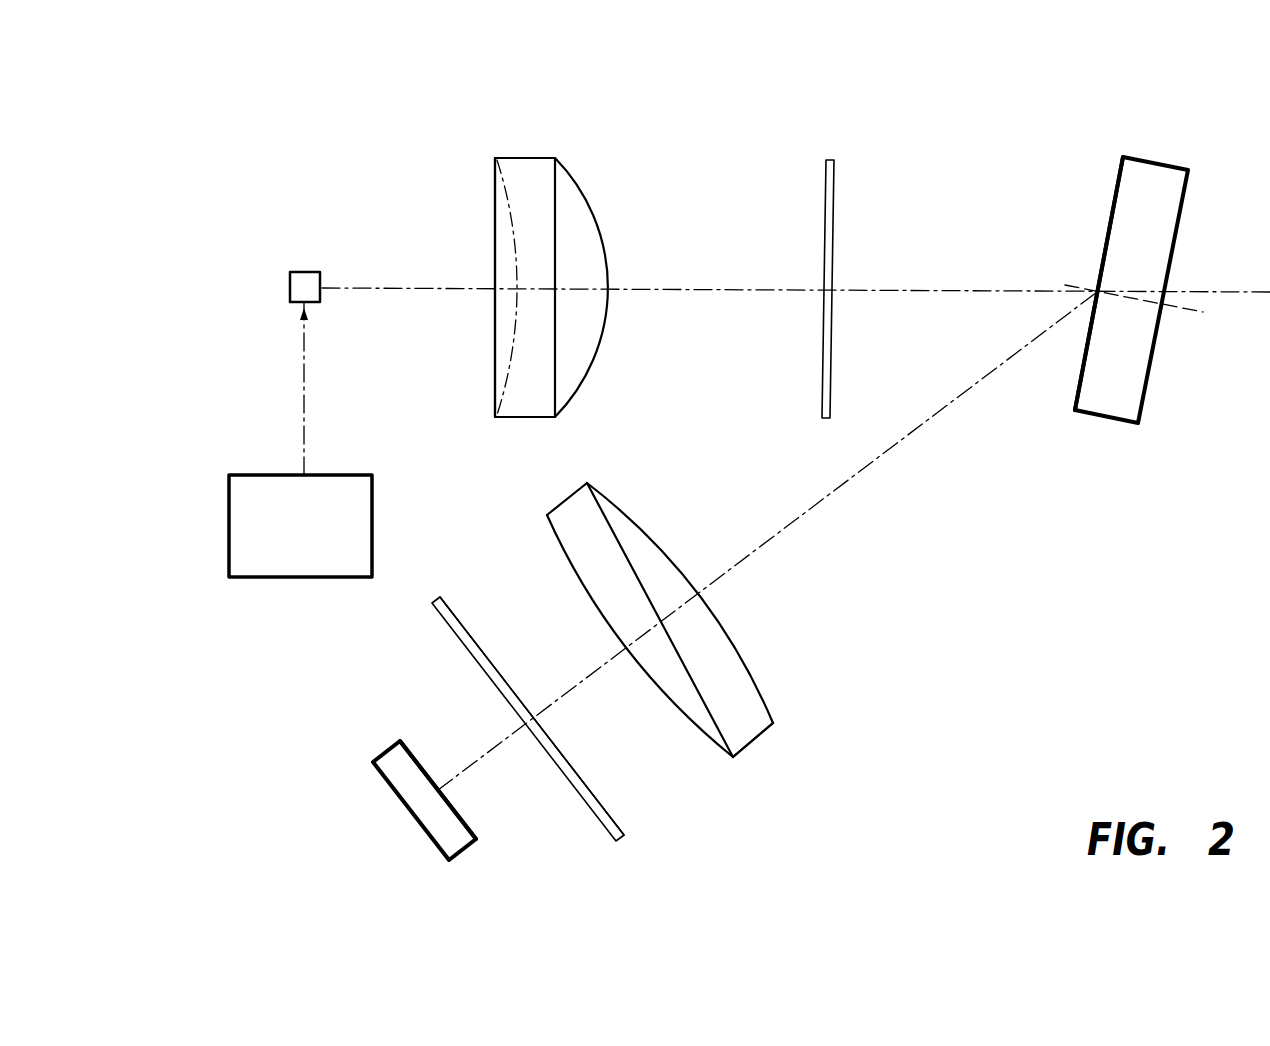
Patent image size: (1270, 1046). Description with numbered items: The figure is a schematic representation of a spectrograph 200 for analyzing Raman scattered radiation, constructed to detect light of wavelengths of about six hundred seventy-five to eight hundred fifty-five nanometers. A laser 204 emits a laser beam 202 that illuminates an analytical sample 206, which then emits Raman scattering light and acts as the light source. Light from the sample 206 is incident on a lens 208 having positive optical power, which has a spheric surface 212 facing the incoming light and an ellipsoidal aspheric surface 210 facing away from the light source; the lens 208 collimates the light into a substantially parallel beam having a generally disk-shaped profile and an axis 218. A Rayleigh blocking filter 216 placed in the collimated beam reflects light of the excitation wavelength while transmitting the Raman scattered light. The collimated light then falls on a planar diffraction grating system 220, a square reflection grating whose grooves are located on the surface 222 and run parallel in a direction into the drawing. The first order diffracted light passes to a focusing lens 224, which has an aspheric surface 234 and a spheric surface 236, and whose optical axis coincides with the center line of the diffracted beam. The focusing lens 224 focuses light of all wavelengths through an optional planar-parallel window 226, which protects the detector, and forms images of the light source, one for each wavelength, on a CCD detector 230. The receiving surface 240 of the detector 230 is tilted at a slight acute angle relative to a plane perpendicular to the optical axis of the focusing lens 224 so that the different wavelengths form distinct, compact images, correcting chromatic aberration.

The spectrograph 200 is at (948, 80).
The laser beam 202 is at (302, 357).
The laser 204 is at (277, 502).
The analytical sample 206 is at (302, 270).
The lens 208 is at (503, 417).
The aspheric surface 210 is at (600, 230).
The spheric surface 212 is at (507, 218).
The Rayleigh blocking filter 216 is at (822, 362).
The axis 218 is at (931, 290).
The planar diffraction grating system 220 is at (1167, 160).
The surface 222 is at (1110, 208).
The focusing lens 224 is at (570, 573).
The planar-parallel window 226 is at (603, 805).
The detector 230 is at (475, 845).
The aspheric surface 234 is at (733, 623).
The spheric surface 236 is at (648, 687).
The receiving surface 240 is at (412, 753).